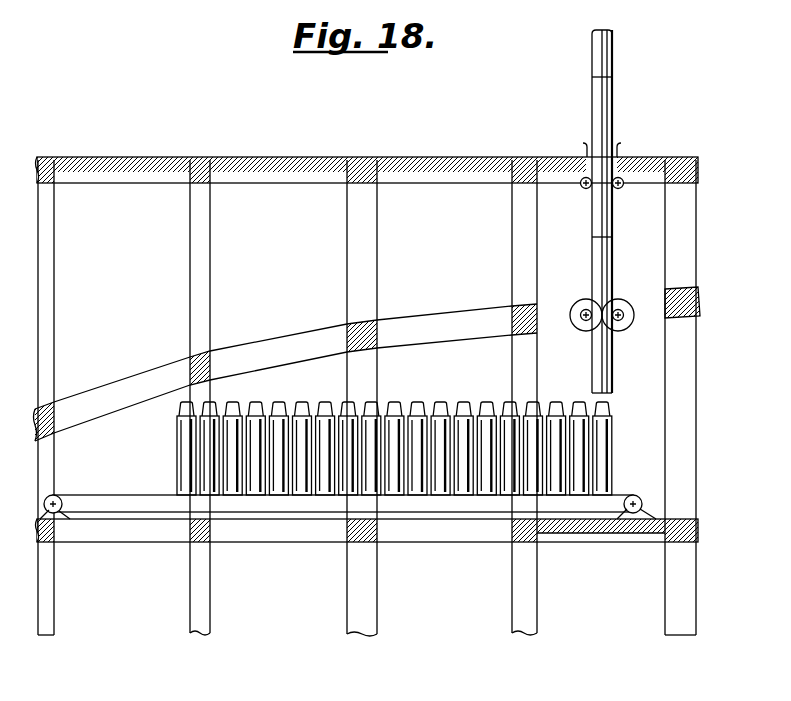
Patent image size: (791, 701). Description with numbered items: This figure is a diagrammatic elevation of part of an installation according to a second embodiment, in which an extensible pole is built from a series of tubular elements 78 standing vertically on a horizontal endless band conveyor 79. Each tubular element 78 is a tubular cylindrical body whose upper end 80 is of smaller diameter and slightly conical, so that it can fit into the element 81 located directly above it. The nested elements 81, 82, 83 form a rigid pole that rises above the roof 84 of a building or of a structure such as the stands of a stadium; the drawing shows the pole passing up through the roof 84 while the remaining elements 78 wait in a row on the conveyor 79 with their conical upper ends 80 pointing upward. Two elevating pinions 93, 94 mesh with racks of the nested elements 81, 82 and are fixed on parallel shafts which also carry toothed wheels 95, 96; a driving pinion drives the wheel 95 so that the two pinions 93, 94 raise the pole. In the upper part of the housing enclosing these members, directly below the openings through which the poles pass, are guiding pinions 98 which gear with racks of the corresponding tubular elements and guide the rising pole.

The tubular element 78 is at (616, 444).
The horizontal endless band conveyor 79 is at (123, 495).
The upper end 80 is at (487, 409).
The nested element 81 is at (616, 377).
The nested element 82 is at (615, 257).
The nested element 83 is at (615, 221).
The roof 84 is at (433, 157).
The elevating pinion 93 is at (623, 321).
The elevating pinion 94 is at (584, 321).
The toothed wheel 95 is at (622, 301).
The toothed wheel 96 is at (586, 301).
The guiding pinion 98 is at (582, 189).